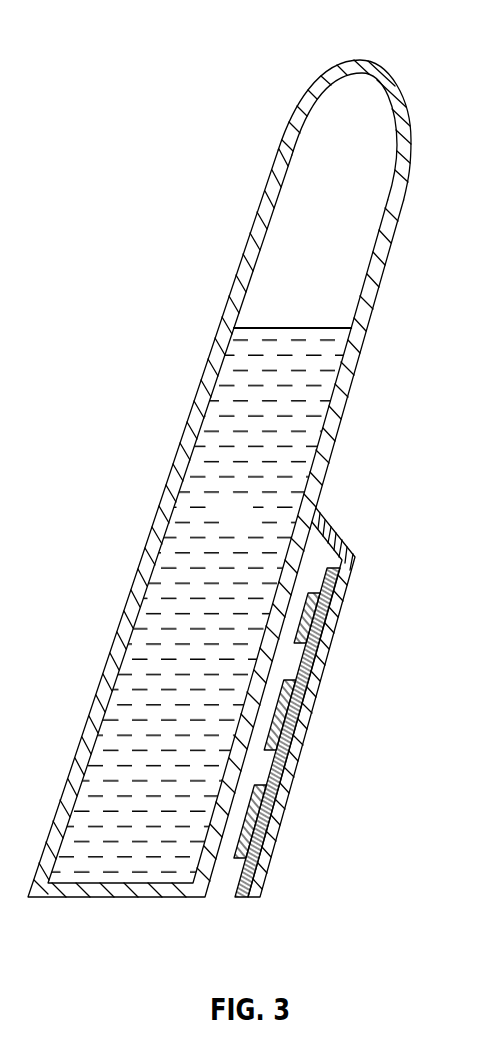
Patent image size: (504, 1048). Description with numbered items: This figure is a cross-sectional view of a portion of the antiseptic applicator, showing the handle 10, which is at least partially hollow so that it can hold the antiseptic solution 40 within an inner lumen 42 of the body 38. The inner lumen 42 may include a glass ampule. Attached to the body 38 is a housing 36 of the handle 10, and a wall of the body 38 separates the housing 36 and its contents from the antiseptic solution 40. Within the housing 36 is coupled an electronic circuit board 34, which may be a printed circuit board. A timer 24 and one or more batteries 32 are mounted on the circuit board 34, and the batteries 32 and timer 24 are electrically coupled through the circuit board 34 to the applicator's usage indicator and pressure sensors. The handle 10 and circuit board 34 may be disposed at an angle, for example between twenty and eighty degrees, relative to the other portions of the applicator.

The handle 10 is at (80, 43).
The timer 24 is at (307, 608).
The batteries 32 is at (283, 708).
The electronic circuit board 34 is at (308, 662).
The housing 36 is at (333, 537).
The body 38 is at (257, 236).
The antiseptic solution 40 is at (251, 532).
The inner lumen 42 is at (378, 108).